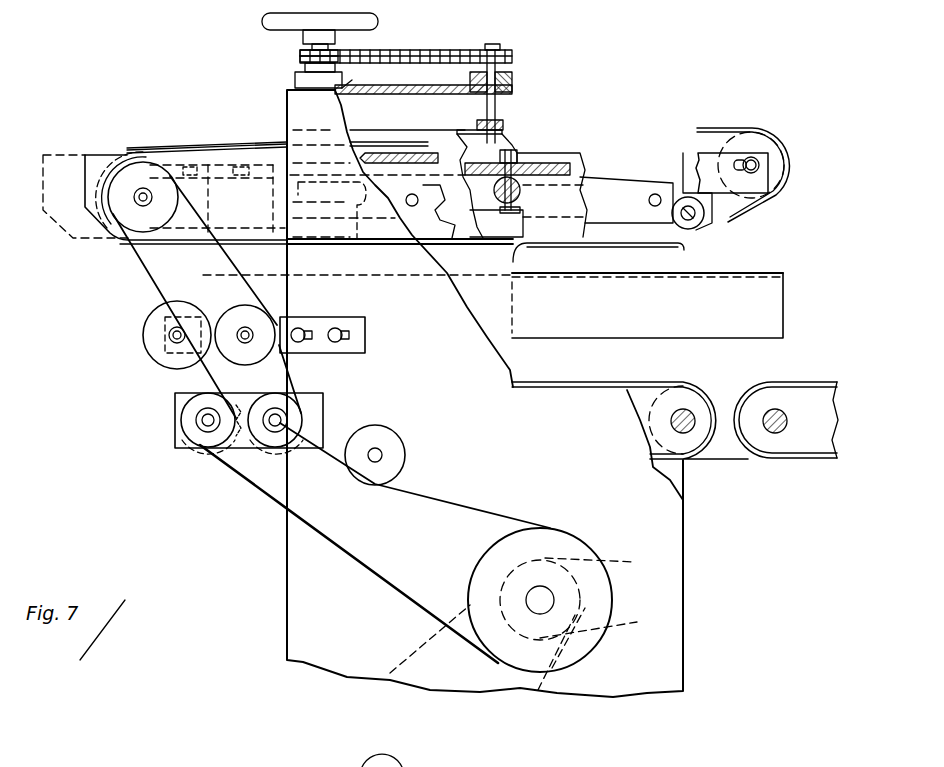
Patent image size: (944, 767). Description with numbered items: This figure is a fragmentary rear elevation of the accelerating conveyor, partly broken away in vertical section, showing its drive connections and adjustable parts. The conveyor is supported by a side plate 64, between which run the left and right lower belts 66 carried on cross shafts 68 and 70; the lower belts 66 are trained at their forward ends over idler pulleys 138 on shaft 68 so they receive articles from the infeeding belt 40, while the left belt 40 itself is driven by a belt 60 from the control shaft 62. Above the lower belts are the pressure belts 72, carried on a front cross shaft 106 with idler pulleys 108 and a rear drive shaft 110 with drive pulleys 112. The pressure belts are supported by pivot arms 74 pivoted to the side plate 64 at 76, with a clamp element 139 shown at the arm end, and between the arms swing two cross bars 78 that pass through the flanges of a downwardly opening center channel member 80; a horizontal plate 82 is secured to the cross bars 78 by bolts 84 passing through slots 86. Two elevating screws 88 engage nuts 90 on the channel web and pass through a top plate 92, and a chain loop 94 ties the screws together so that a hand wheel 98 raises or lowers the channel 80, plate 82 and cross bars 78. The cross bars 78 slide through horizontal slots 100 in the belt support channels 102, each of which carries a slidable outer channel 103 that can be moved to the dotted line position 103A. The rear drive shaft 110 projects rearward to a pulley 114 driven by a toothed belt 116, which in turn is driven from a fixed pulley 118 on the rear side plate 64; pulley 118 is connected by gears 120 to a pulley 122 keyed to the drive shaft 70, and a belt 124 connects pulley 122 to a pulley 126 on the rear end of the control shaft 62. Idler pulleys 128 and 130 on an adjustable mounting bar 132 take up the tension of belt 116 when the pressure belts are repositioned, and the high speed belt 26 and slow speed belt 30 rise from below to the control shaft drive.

The high speed belt 26 is at (432, 634).
The slow speed belt 30 is at (440, 660).
The left belt 40 is at (810, 382).
The belt 60 is at (632, 540).
The control shaft 62 is at (550, 600).
The side plate 64 is at (305, 112).
The lower belt 66 is at (714, 386).
The cross shaft 68 is at (683, 410).
The drive shaft 70 is at (207, 427).
The pressure belt 72 is at (758, 128).
The pivot arm 74 is at (635, 210).
The pivot 76 is at (657, 194).
The cross bar 78 is at (522, 194).
The center channel member 80 is at (363, 130).
The horizontal plate 82 is at (580, 166).
The bolt 84 is at (518, 153).
The slot 86 is at (568, 165).
The elevating screw 88 is at (493, 107).
The nut 90 is at (505, 126).
The top plate 92 is at (350, 88).
The chain loop 94 is at (447, 43).
The hand wheel 98 is at (277, 18).
The horizontal slot 100 is at (366, 236).
The belt support channel 102 is at (200, 157).
The outer channel 103 is at (103, 163).
The dotted line position 103A is at (65, 140).
The front cross shaft 106 is at (760, 167).
The idler pulley 108 is at (772, 150).
The rear drive shaft 110 is at (120, 225).
The drive pulley 112 is at (97, 208).
The pulley 114 is at (152, 218).
The belt 116 is at (150, 262).
The fixed pulley 118 is at (268, 440).
The gears 120 is at (236, 442).
The pulley 122 is at (190, 423).
The belt 124 is at (423, 493).
The pulley 126 is at (577, 547).
The idler pulley 128 is at (253, 312).
The idler pulley 130 is at (153, 352).
The mounting bar 132 is at (327, 348).
The idler pulley 138 is at (697, 440).
The clamp screw 139 is at (695, 232).